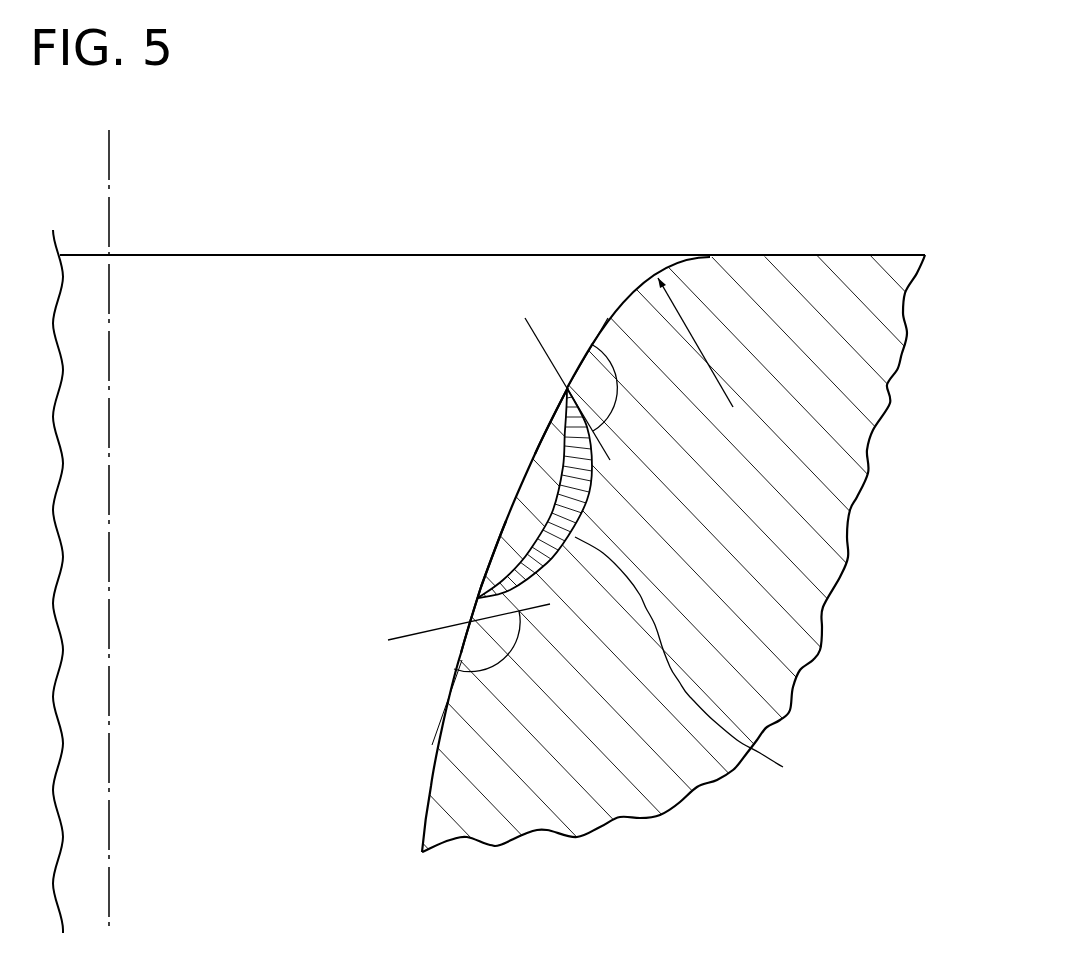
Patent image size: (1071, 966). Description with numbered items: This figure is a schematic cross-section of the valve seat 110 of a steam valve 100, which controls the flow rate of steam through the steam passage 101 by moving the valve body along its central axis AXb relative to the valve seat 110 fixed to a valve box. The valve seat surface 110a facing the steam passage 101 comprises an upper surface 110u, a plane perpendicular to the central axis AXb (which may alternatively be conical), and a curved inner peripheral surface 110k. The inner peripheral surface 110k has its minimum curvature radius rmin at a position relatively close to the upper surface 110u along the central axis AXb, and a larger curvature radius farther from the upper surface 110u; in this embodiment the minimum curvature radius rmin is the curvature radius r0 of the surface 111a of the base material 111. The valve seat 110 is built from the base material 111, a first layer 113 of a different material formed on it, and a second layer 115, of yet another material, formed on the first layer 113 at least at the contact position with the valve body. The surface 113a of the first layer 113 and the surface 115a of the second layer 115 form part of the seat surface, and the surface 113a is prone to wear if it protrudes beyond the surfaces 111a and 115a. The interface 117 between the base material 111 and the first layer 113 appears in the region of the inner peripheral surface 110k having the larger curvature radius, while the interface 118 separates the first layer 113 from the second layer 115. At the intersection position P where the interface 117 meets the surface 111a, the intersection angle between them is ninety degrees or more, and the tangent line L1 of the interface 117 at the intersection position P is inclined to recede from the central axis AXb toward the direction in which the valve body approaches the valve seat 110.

The steam valve 100 is at (778, 128).
The steam passage 101 is at (710, 169).
The valve seat 110 is at (535, 505).
The base material 111 is at (857, 493).
The surface of the base material 111a is at (831, 255).
The valve seat surface 110a is at (591, 501).
The upper surface 110u is at (859, 255).
The inner peripheral surface 110k is at (444, 493).
The first layer 113 is at (523, 565).
The surface of the first layer 113a is at (560, 402).
The second layer 115 is at (537, 479).
The surface of the second layer 115a is at (504, 520).
The interface between the base material and the first layer 117 is at (705, 661).
The interface between the first layer and the second layer 118 is at (562, 445).
The central axis of the valve body AXb is at (112, 863).
The intersection position P is at (567, 385).
The tangent line of the interface L1 is at (600, 440).
The minimum curvature radius rmin is at (718, 342).
The curvature radius of the surface of the base material r0 is at (718, 342).